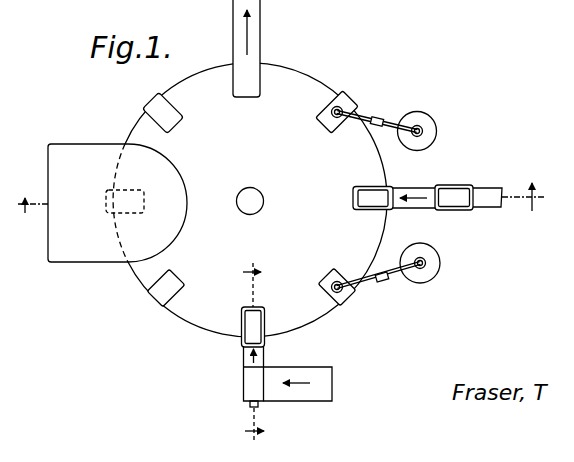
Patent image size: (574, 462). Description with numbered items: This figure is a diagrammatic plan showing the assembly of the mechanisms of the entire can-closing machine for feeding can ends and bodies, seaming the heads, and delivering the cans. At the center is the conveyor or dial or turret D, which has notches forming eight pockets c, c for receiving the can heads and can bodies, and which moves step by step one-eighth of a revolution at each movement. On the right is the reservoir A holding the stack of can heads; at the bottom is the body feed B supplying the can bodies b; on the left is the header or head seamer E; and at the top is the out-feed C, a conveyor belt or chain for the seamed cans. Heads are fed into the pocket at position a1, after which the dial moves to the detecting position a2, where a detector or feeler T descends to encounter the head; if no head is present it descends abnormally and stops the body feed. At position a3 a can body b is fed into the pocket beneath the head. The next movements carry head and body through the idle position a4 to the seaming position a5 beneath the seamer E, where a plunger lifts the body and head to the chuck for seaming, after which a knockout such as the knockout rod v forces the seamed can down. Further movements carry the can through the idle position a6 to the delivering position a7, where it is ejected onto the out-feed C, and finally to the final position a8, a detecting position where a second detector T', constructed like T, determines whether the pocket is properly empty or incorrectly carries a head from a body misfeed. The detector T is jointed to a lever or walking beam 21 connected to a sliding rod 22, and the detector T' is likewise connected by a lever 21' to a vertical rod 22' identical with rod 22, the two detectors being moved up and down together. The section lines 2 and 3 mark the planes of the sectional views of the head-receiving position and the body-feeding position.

The pocket c is at (238, 319).
The out-feed C is at (346, 273).
The header or head seamer E is at (48, 204).
The reservoir A is at (468, 178).
The body feed B is at (297, 392).
The conveyor or dial or turret D is at (258, 266).
The detector or feeler T is at (354, 306).
The detector T' is at (351, 93).
The pocket position a1 is at (361, 197).
The detecting position a2 is at (336, 269).
The pocket position a3 is at (255, 307).
The idle position a4 is at (171, 270).
The seaming position a5 is at (144, 200).
The idle position a6 is at (175, 120).
The delivering position a7 is at (249, 59).
The final position a8 is at (332, 124).
The can body b is at (265, 378).
The knockout rod v is at (251, 405).
The lever or walking beam 21 is at (381, 294).
The lever 21' is at (377, 103).
The sliding rod 22 is at (435, 272).
The vertical rod 22' is at (434, 123).
The section line 2- 2 is at (284, 193).
The section line 3- 3 is at (257, 347).